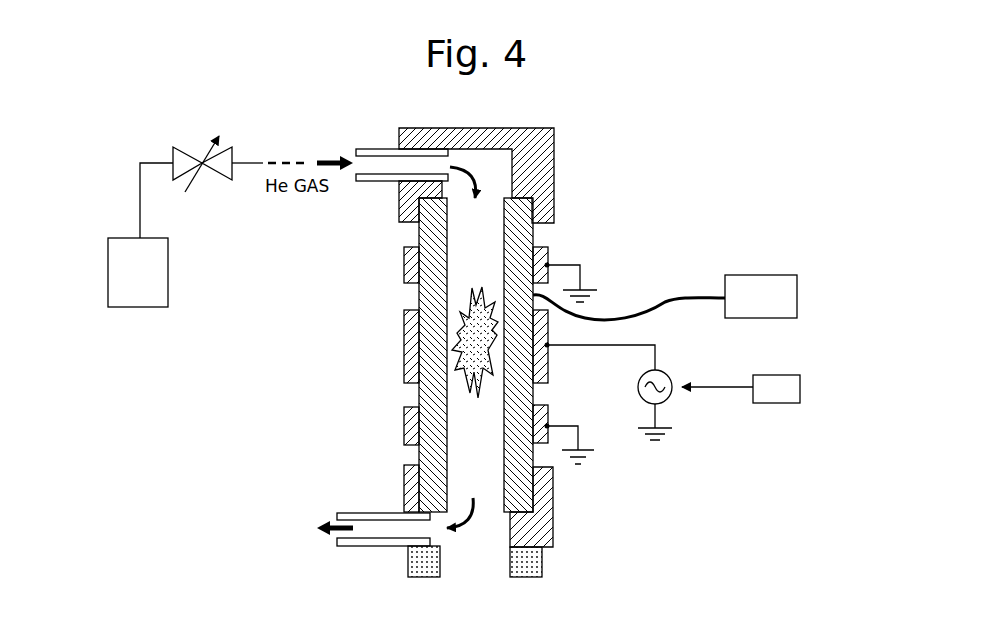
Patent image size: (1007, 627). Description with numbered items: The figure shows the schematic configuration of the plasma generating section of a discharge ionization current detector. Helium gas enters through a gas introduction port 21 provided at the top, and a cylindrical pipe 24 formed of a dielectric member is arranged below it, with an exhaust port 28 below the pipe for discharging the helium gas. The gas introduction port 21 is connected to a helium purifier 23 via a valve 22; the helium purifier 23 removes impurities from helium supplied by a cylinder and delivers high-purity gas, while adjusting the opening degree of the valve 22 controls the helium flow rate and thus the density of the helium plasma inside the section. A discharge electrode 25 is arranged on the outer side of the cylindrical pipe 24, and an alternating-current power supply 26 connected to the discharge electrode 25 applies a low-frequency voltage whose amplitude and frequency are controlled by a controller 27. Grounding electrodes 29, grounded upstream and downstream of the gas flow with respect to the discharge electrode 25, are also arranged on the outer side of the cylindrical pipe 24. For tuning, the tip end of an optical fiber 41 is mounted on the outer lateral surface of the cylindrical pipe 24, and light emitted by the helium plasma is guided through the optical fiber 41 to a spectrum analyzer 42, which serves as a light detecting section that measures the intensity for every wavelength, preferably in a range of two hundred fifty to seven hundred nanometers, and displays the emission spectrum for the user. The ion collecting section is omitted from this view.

The gas introduction port 21 is at (356, 149).
The valve 22 is at (196, 138).
The helium purifier 23 is at (108, 238).
The cylindrical pipe 24 is at (520, 478).
The discharge electrode 25 is at (548, 383).
The alternating-current power supply 26 is at (668, 367).
The controller 27 is at (800, 375).
The exhaust port 28 is at (337, 512).
The grounding electrodes 29 is at (547, 252).
The optical fiber 41 is at (617, 318).
The spectrum analyzer 42 is at (798, 274).